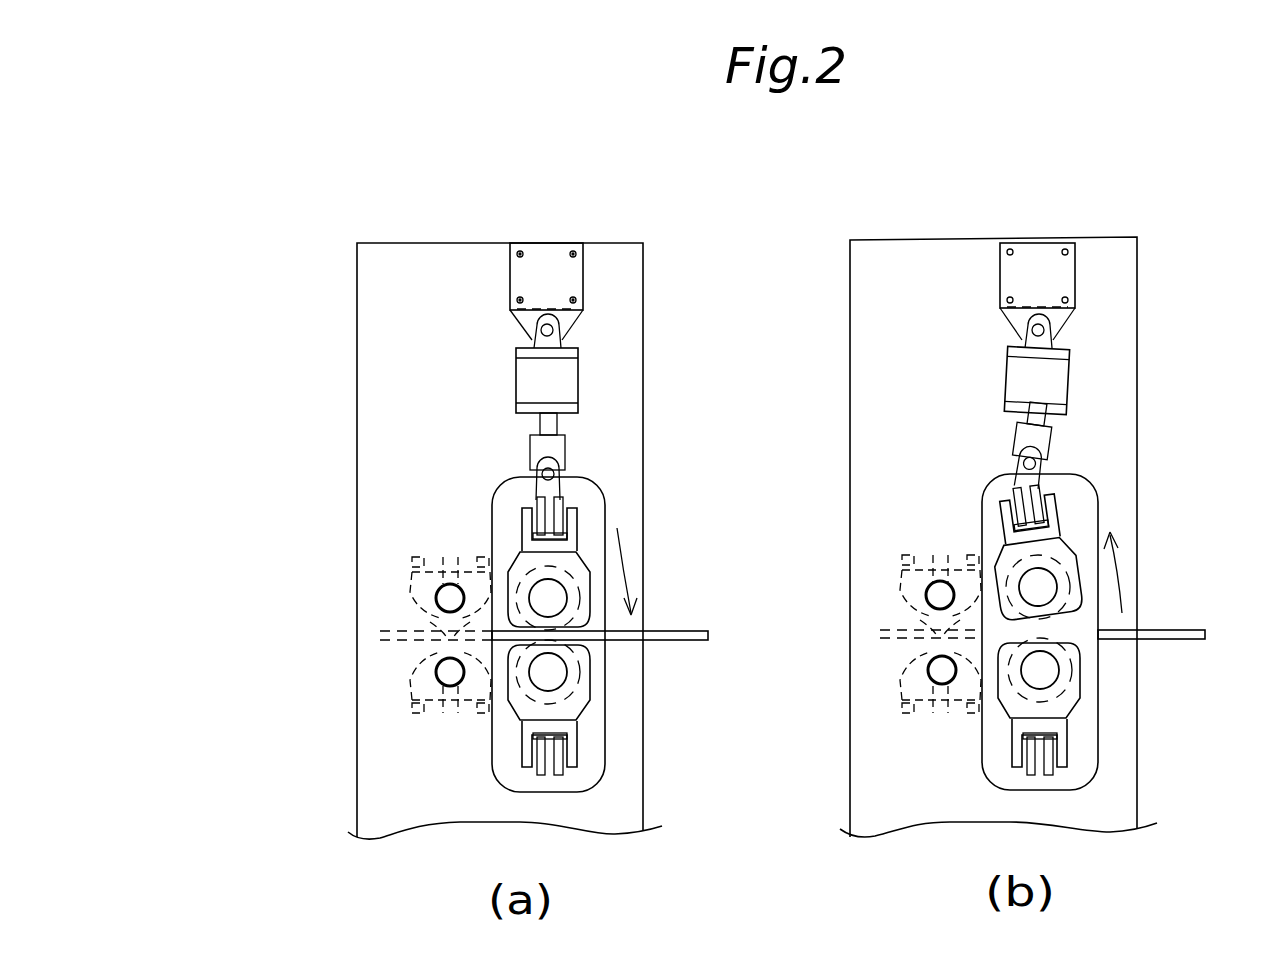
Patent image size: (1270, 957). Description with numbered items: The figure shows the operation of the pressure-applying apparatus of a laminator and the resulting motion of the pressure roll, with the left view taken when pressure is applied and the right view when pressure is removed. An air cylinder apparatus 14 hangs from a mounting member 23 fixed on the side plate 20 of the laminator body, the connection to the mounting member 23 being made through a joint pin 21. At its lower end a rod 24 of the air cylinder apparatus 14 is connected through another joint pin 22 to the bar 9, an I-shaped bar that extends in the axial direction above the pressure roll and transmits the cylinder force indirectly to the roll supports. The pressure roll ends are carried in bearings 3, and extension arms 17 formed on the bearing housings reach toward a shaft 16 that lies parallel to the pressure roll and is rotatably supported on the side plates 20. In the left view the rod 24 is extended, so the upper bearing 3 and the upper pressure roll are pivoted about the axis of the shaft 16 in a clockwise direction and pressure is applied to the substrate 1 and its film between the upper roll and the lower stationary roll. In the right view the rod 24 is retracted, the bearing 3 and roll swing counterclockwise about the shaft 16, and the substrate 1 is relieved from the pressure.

The substrate 1 is at (679, 632).
The bearing 3 is at (593, 612).
The bar 9 is at (550, 503).
The air cylinder apparatus 14 is at (524, 378).
The shaft 16 is at (445, 595).
The extension arm 17 is at (497, 573).
The side plate 20 is at (375, 322).
The joint pin 21 is at (556, 330).
The joint pin 22 is at (562, 474).
The mounting member 23 is at (522, 276).
The rod 24 is at (557, 422).